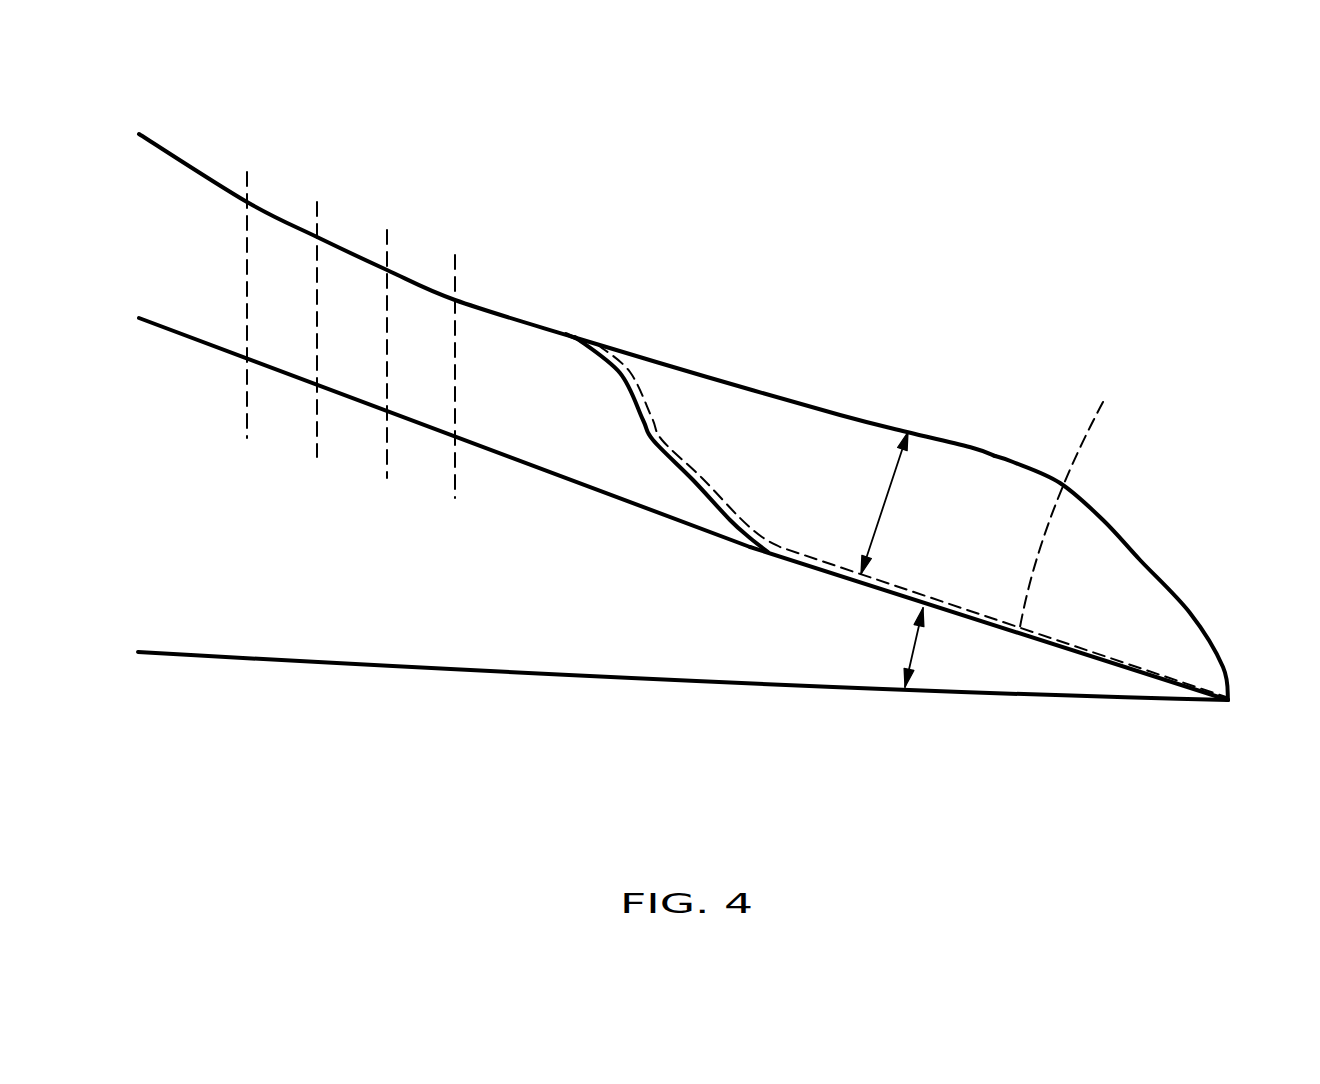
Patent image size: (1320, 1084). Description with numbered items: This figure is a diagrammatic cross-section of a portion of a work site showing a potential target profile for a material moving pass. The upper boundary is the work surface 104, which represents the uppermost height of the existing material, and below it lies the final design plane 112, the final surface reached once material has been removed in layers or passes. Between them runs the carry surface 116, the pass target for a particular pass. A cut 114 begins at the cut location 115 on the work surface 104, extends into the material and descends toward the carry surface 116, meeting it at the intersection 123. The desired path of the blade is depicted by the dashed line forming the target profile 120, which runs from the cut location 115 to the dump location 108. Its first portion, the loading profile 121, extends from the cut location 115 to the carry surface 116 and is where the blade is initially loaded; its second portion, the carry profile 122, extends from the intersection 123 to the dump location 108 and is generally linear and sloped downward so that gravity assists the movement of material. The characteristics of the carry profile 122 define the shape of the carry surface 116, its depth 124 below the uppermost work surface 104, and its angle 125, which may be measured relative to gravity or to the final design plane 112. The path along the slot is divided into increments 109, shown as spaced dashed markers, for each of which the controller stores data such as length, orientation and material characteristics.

The work surface 104 is at (287, 217).
The dump location 108 is at (1188, 567).
The increments 109 is at (410, 465).
The final design plane 112 is at (297, 659).
The cut 114 is at (652, 442).
The cut location 115 is at (575, 337).
The carry surface 116 is at (197, 338).
The target profile 120 is at (795, 462).
The loading profile 121 is at (630, 370).
The carry profile 122 is at (1073, 499).
The intersection 123 is at (748, 548).
The depth of the carry surface 124 is at (884, 505).
The angle of the carry surface 125 is at (905, 643).